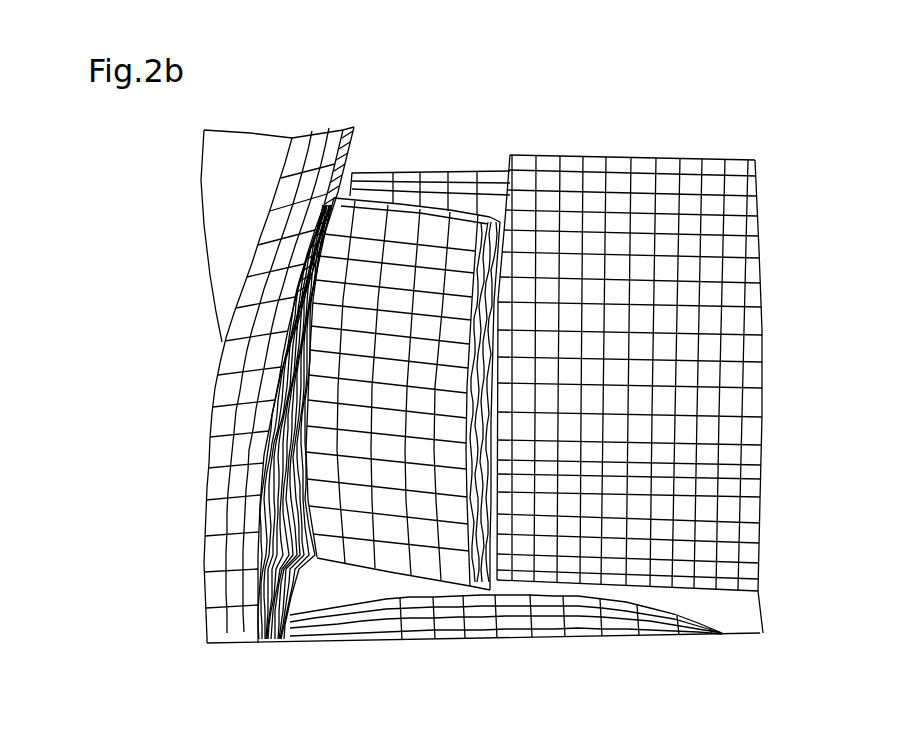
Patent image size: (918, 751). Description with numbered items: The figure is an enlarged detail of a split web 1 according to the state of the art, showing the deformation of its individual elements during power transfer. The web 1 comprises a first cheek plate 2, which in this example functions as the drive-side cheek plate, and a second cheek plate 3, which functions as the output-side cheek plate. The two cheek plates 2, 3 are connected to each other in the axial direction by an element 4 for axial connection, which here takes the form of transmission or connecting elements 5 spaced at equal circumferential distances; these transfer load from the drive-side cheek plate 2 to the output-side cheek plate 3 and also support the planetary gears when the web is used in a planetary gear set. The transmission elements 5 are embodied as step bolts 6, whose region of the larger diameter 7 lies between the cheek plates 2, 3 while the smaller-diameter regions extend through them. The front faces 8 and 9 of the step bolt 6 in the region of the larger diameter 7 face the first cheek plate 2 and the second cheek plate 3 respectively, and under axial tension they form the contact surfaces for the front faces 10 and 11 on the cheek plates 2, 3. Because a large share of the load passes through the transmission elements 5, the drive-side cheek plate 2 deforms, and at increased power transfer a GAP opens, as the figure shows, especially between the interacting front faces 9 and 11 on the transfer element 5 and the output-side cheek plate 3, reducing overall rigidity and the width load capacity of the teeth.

The web 1 is at (445, 155).
The first cheek plate 2 is at (240, 153).
The second cheek plate 3 is at (652, 195).
The element for axial connection 4 is at (415, 535).
The transmission or connecting elements 5 is at (365, 520).
The step bolt 6 is at (400, 352).
The region of the larger diameter 7 is at (448, 245).
The front face of step bolt 8 is at (315, 287).
The front face of step bolt 9 is at (483, 278).
The front face on first cheek plate 10 is at (260, 428).
The front face on second cheek plate 11 is at (487, 560).
The gap GAP is at (490, 416).